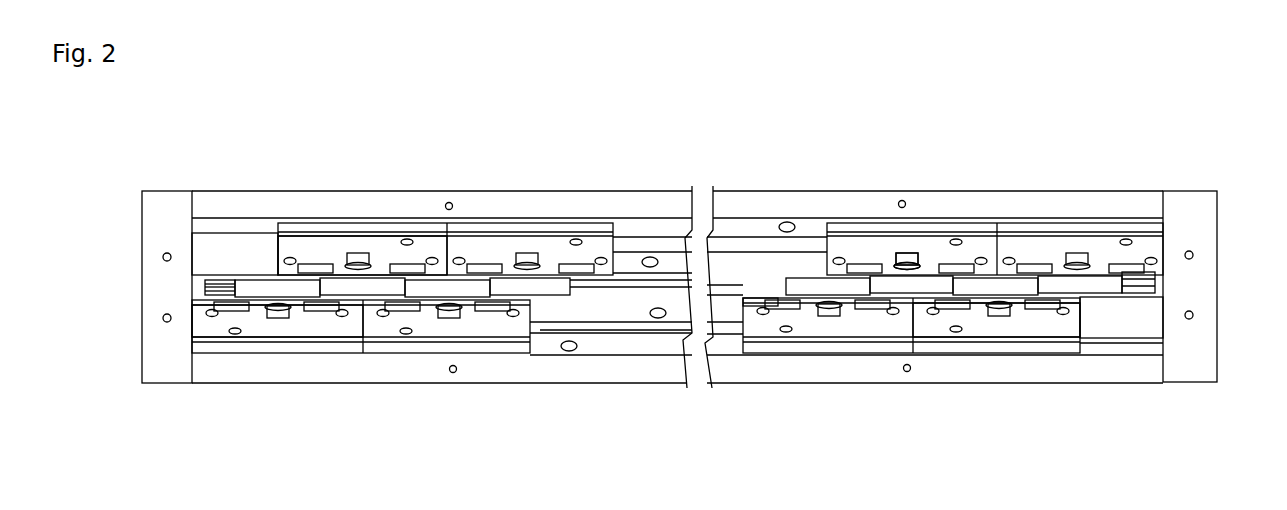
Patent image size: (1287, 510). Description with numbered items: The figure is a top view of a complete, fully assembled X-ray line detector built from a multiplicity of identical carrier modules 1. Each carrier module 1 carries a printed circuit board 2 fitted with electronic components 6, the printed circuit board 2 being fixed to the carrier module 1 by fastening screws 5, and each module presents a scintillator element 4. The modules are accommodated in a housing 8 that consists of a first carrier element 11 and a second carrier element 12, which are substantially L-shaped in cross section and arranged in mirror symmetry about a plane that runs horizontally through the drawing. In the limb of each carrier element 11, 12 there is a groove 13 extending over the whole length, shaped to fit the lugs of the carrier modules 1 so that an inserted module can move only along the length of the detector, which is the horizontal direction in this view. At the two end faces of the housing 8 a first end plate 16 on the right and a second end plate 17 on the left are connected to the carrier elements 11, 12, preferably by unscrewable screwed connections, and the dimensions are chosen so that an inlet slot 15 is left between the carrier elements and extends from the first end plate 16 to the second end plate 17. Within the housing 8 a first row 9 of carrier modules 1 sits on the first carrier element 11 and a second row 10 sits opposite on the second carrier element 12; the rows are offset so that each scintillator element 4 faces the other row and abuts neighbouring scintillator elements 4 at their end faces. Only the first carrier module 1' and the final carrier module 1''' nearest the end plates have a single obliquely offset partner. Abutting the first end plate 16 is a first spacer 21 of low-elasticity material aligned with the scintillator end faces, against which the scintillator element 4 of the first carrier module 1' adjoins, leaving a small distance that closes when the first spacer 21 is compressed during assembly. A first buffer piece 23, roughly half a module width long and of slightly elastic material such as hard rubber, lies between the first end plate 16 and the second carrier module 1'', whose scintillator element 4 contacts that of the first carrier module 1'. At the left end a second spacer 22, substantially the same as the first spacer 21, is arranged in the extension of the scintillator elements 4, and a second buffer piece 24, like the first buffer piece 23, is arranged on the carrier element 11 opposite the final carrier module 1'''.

The carrier module 1 is at (362, 207).
The first carrier module 1' is at (995, 206).
The second carrier module 1'' is at (996, 364).
The final carrier module 1''' is at (277, 366).
The printed circuit board 2 is at (970, 323).
The scintillator element 4 is at (918, 283).
The fastening screw 5 is at (768, 302).
The electronic component 6 is at (908, 258).
The housing 8 is at (512, 370).
The first row 9 is at (527, 218).
The second row 10 is at (433, 357).
The first carrier element 11 is at (653, 228).
The second carrier element 12 is at (595, 347).
The groove 13 is at (543, 328).
The inlet slot 15 is at (620, 270).
The first end plate 16 is at (1183, 292).
The second end plate 17 is at (160, 205).
The first spacer 21 is at (1165, 270).
The second spacer 22 is at (215, 285).
The first buffer piece 23 is at (1142, 321).
The second buffer piece 24 is at (237, 243).